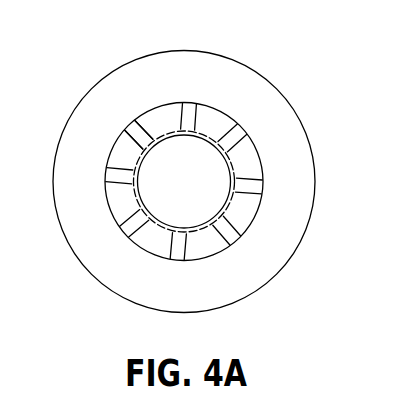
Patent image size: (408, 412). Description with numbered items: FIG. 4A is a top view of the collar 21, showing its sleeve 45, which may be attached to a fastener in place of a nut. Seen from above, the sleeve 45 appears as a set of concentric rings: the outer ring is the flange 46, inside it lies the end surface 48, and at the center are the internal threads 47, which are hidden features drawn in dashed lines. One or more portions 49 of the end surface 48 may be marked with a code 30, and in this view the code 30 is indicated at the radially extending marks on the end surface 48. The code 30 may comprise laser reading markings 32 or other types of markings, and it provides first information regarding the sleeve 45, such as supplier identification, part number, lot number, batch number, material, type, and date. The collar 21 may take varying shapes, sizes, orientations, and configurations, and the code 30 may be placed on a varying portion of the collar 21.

The collar 21 is at (291, 81).
The code 30 is at (144, 127).
The laser reading markings 32 is at (176, 116).
The sleeve 45 is at (261, 152).
The flange 46 is at (292, 214).
The internal threads 47 is at (258, 203).
The end surface 48 is at (205, 240).
The portions 49 is at (219, 128).